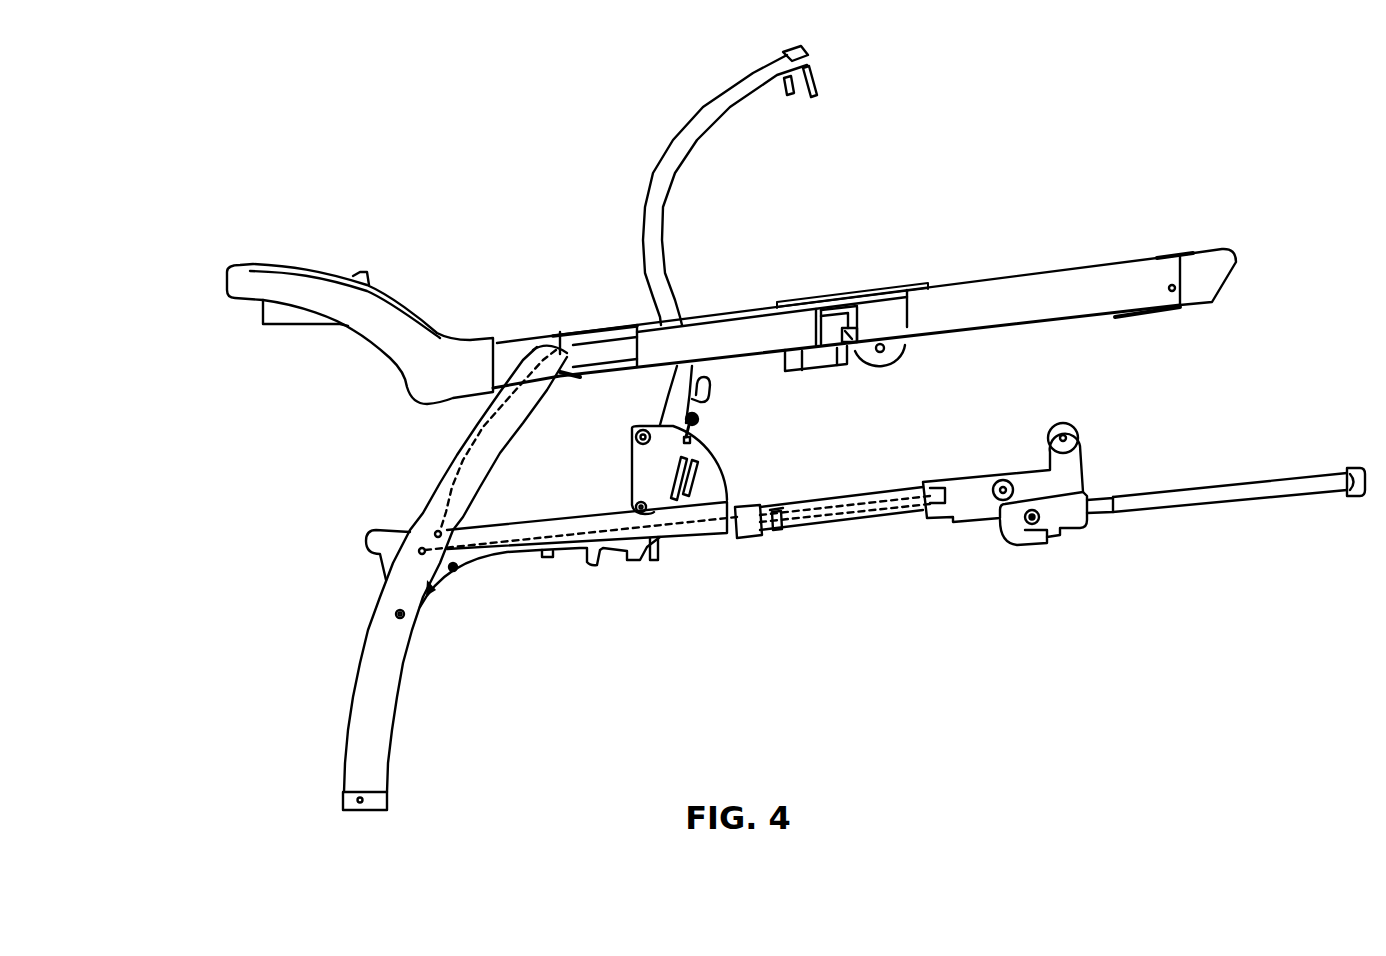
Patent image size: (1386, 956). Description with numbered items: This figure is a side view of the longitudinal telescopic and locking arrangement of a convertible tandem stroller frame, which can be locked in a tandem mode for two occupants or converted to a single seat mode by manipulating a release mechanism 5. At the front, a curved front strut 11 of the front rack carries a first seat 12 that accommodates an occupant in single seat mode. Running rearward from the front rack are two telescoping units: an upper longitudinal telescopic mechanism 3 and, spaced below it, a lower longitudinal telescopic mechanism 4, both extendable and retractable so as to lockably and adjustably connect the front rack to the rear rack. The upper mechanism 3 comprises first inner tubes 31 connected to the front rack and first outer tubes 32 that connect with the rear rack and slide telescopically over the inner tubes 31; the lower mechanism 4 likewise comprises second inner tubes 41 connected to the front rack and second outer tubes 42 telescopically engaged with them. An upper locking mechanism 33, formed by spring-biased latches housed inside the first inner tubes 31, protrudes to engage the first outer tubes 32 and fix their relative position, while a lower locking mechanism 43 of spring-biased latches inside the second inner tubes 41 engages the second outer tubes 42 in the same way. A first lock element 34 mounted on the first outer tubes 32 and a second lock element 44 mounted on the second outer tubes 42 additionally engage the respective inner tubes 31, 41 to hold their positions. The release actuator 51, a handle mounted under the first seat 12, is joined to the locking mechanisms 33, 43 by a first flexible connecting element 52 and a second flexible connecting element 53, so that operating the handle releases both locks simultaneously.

The upper longitudinal telescopic mechanism 3 is at (916, 222).
The lower longitudinal telescopic mechanism 4 is at (846, 577).
The release mechanism 5 is at (322, 636).
The front strut 11 is at (387, 683).
The first seat 12 is at (567, 513).
The first inner tubes 31 is at (747, 312).
The first outer tubes 32 is at (1087, 278).
The upper locking mechanism 33 is at (855, 330).
The first lock element 34 is at (814, 370).
The second inner tubes 41 is at (843, 492).
The second outer tubes 42 is at (903, 487).
The lower locking mechanism 43 is at (778, 530).
The second lock element 44 is at (747, 523).
The release actuator 51 is at (382, 572).
The first flexible connecting element 52 is at (709, 324).
The second flexible connecting element 53 is at (520, 547).